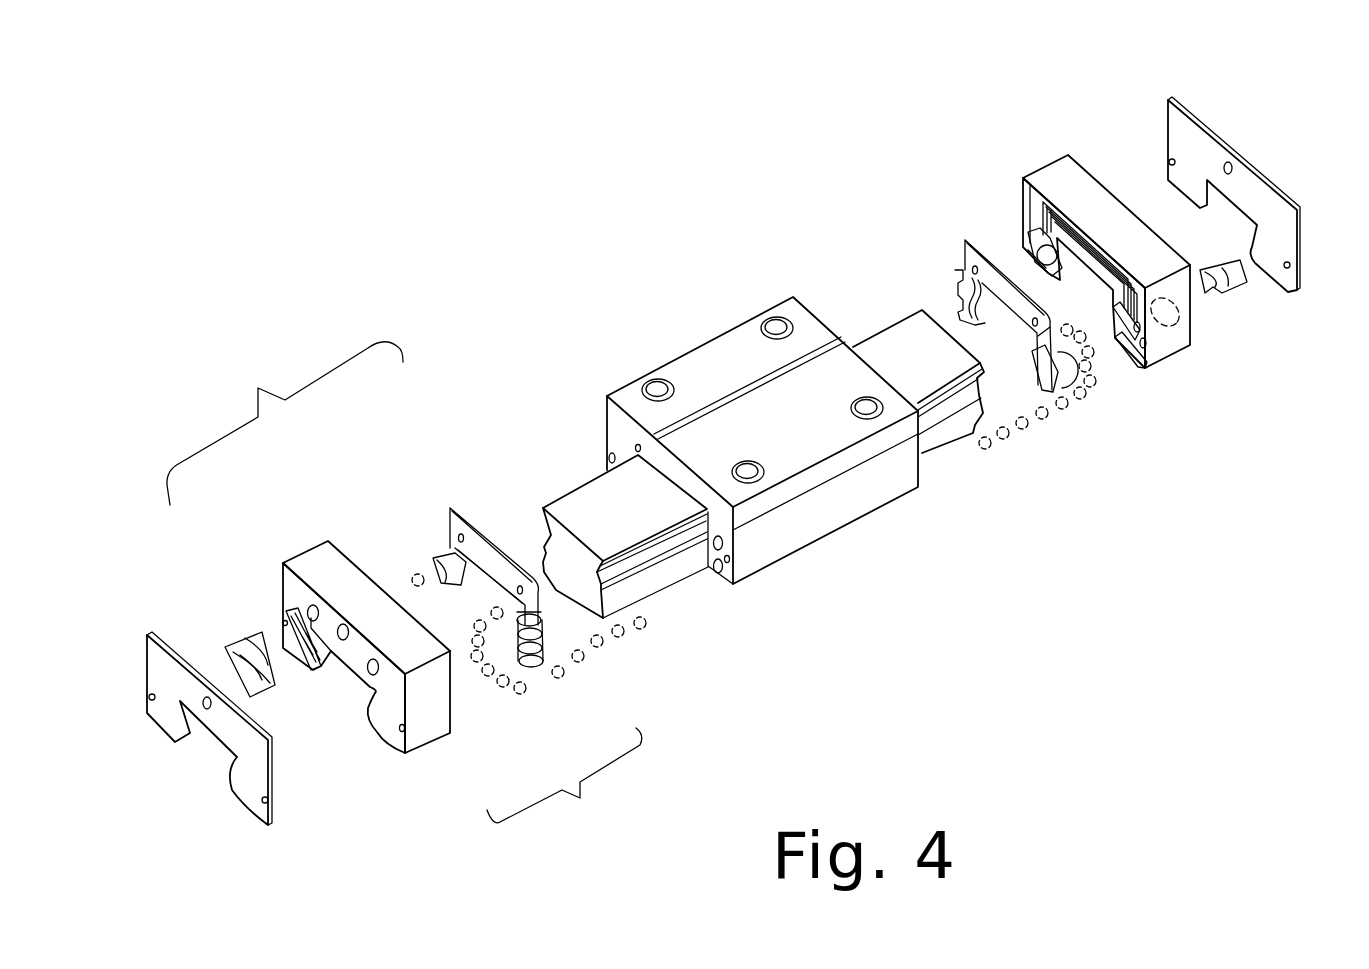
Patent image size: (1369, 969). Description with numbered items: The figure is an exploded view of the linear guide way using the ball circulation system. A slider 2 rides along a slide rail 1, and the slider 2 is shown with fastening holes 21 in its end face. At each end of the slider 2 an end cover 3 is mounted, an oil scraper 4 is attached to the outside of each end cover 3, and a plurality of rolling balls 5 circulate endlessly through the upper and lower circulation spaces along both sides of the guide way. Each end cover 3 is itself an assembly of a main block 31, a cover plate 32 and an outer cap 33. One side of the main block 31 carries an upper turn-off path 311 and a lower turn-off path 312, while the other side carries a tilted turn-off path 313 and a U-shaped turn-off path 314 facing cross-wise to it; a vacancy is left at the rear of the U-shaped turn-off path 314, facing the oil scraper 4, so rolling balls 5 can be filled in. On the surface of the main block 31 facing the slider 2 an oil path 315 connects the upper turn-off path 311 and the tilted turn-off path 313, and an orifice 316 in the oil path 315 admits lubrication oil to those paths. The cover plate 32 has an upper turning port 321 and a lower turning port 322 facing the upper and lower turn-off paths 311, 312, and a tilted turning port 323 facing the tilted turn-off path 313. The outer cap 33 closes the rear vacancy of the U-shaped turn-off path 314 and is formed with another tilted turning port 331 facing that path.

The slide rail 1 is at (588, 498).
The slider 2 is at (712, 360).
The fastening holes 21 is at (604, 447).
The end cover 3 is at (404, 592).
The main block 31 is at (420, 716).
The upper turn-off path 311 is at (1046, 205).
The lower turn-off path 312 is at (1027, 255).
The tilted turn-off path 313 is at (1118, 350).
The U-shaped turn-off path 314 is at (296, 610).
The oil path 315 is at (1063, 215).
The orifice 316 is at (1095, 245).
The cover plate 32 is at (480, 540).
The upper turning port 321 is at (541, 633).
The lower turning port 322 is at (540, 675).
The tilted turning port 323 is at (432, 556).
The outer cap 33 is at (245, 645).
The tilted turning port 331 is at (273, 652).
The oil scraper 4 is at (258, 772).
The rolling balls 5 is at (622, 633).